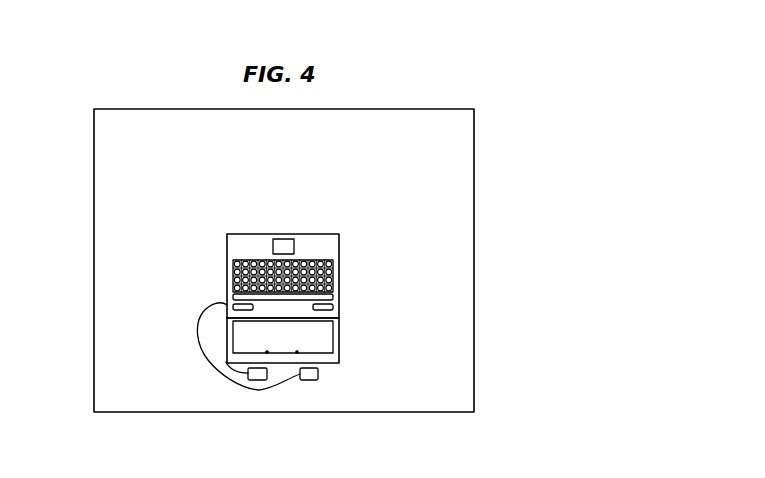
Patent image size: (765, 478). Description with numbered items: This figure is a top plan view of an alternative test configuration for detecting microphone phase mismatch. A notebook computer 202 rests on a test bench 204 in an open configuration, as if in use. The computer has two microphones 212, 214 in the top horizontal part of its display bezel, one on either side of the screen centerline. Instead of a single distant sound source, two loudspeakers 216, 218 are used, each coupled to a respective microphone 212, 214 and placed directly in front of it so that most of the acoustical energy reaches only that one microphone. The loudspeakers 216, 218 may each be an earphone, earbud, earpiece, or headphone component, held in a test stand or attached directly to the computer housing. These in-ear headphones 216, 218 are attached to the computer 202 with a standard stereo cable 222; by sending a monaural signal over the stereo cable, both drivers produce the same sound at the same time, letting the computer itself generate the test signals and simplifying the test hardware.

The notebook computer 202 is at (227, 257).
The test bench 204 is at (474, 192).
The microphone 212 is at (267, 352).
The microphone 214 is at (297, 352).
The loudspeaker 216 is at (259, 380).
The loudspeaker 218 is at (307, 380).
The stereo cable 222 is at (198, 331).